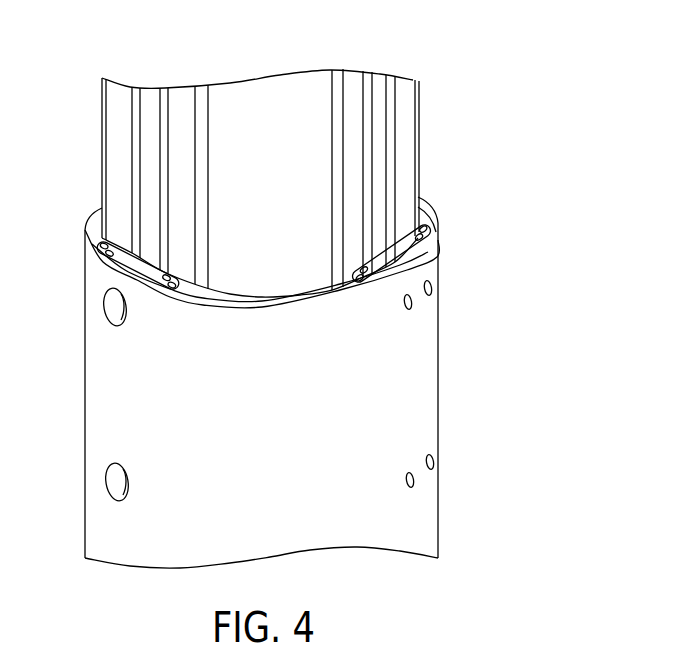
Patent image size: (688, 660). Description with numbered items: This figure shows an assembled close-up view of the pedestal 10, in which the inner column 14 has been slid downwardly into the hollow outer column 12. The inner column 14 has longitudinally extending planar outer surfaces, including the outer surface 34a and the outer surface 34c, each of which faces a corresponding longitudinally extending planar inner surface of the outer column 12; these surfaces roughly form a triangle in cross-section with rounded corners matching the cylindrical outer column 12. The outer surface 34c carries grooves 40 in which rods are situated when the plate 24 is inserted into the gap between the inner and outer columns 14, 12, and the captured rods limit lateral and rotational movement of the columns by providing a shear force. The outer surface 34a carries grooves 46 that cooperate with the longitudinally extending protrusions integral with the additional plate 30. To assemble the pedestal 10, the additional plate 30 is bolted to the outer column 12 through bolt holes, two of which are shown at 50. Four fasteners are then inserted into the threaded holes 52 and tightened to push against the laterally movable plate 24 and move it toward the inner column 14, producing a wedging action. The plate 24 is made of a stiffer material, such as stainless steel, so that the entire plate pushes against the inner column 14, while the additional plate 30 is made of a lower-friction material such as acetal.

The pedestal 10 is at (518, 190).
The outer column 12 is at (438, 400).
The inner column 14 is at (253, 100).
The plate 24 is at (400, 258).
The additional plate 30 is at (118, 257).
The planar outer surface 34a is at (118, 120).
The planar outer surface 34c is at (409, 168).
The grooves 40 is at (393, 112).
The grooves 46 is at (135, 110).
The bolt holes 50 is at (105, 309).
The threaded holes 52 is at (413, 305).